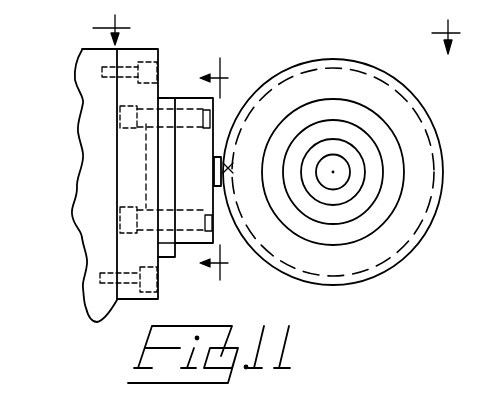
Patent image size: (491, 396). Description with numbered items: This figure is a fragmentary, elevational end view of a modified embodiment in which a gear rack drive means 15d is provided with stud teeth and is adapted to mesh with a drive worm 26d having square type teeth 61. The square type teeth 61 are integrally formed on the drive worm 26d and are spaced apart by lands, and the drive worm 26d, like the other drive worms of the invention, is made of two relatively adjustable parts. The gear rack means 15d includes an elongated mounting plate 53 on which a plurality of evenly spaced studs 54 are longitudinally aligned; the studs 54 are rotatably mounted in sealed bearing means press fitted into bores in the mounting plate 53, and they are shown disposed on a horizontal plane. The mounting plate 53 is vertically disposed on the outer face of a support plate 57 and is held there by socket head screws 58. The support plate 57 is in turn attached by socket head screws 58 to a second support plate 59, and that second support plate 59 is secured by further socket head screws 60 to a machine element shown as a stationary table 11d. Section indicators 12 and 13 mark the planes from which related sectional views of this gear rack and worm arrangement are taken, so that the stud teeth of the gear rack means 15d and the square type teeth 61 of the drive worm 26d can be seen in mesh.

The stationary table 11d is at (97, 309).
The section line 12 is at (289, 30).
The section line 13 is at (227, 169).
The gear rack drive means 15d is at (205, 201).
The drive worm 26d is at (354, 279).
The mounting plate 53 is at (203, 147).
The studs 54 is at (229, 170).
The support plate 57 is at (167, 253).
The socket head screws 58 is at (120, 174).
The second support plate 59 is at (143, 50).
The socket head screws 60 is at (158, 61).
The square type teeth 61 is at (437, 138).